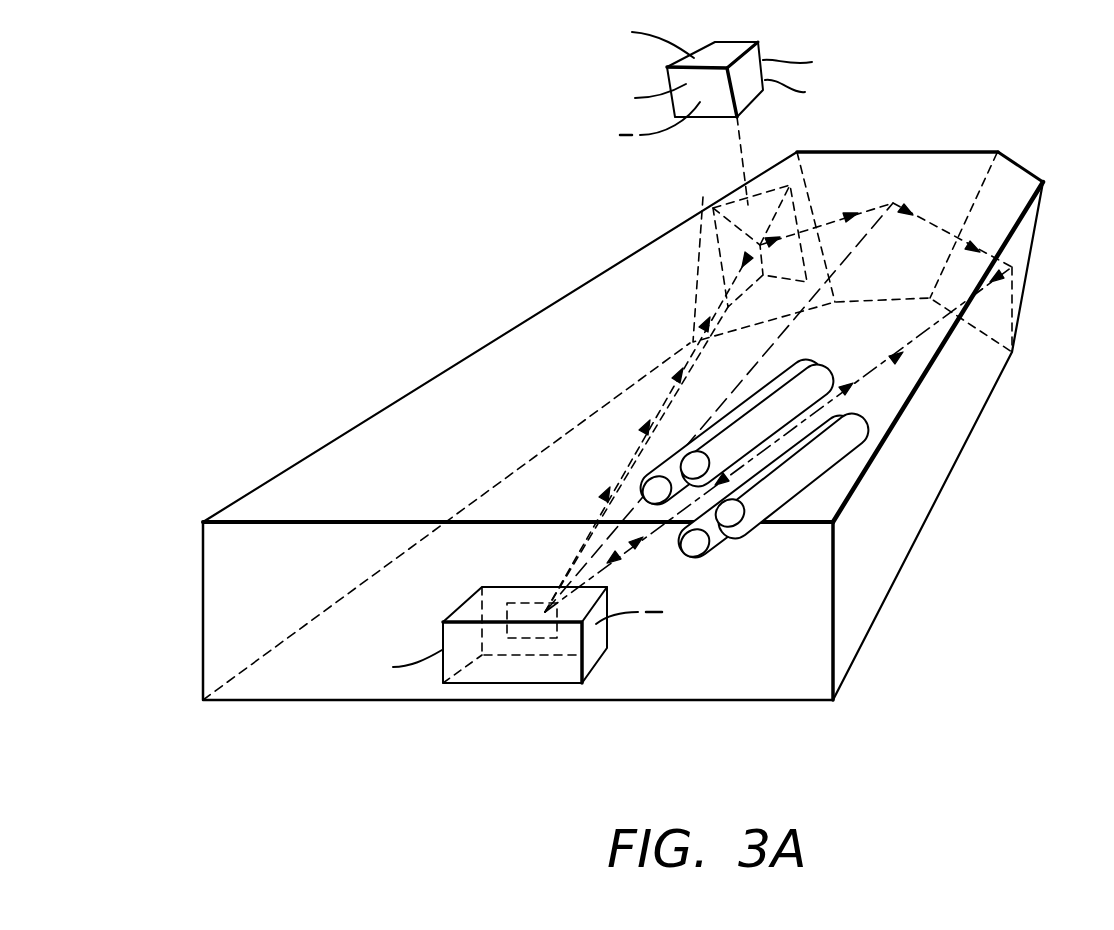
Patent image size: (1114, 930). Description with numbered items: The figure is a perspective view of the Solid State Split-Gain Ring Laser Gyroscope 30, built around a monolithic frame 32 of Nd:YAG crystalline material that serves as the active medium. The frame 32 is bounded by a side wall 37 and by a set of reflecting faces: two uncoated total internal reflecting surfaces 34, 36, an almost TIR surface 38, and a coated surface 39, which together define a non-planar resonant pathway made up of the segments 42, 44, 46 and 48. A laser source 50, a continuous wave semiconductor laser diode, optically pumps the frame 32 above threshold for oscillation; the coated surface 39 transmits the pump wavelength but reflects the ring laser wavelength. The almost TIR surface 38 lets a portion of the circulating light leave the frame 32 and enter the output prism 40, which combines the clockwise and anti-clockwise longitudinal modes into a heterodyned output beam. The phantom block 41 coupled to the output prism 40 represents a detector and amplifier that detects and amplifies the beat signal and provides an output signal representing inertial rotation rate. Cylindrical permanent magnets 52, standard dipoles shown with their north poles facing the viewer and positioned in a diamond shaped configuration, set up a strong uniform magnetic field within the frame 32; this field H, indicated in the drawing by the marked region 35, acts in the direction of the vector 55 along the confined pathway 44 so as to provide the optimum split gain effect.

The Solid State Split-Gain Ring Laser Gyroscope 30 is at (486, 302).
The monolithic frame 32 is at (877, 615).
The total internal reflecting surface 34 is at (1043, 182).
The magnetic field region 35 is at (903, 352).
The total internal reflecting surface 36 is at (940, 152).
The side wall 37 is at (327, 467).
The almost TIR surface 38 is at (765, 192).
The coated surface 39 is at (277, 678).
The output prism 40 is at (723, 197).
The phantom block 41 is at (762, 44).
The resonant pathway segment 42 is at (637, 478).
The pathway 44 is at (933, 327).
The resonant pathway segment 46 is at (940, 230).
The resonant pathway segment 48 is at (828, 222).
The laser source 50 is at (596, 643).
The cylindrical magnets 52 is at (733, 548).
The vector 55 is at (863, 383).